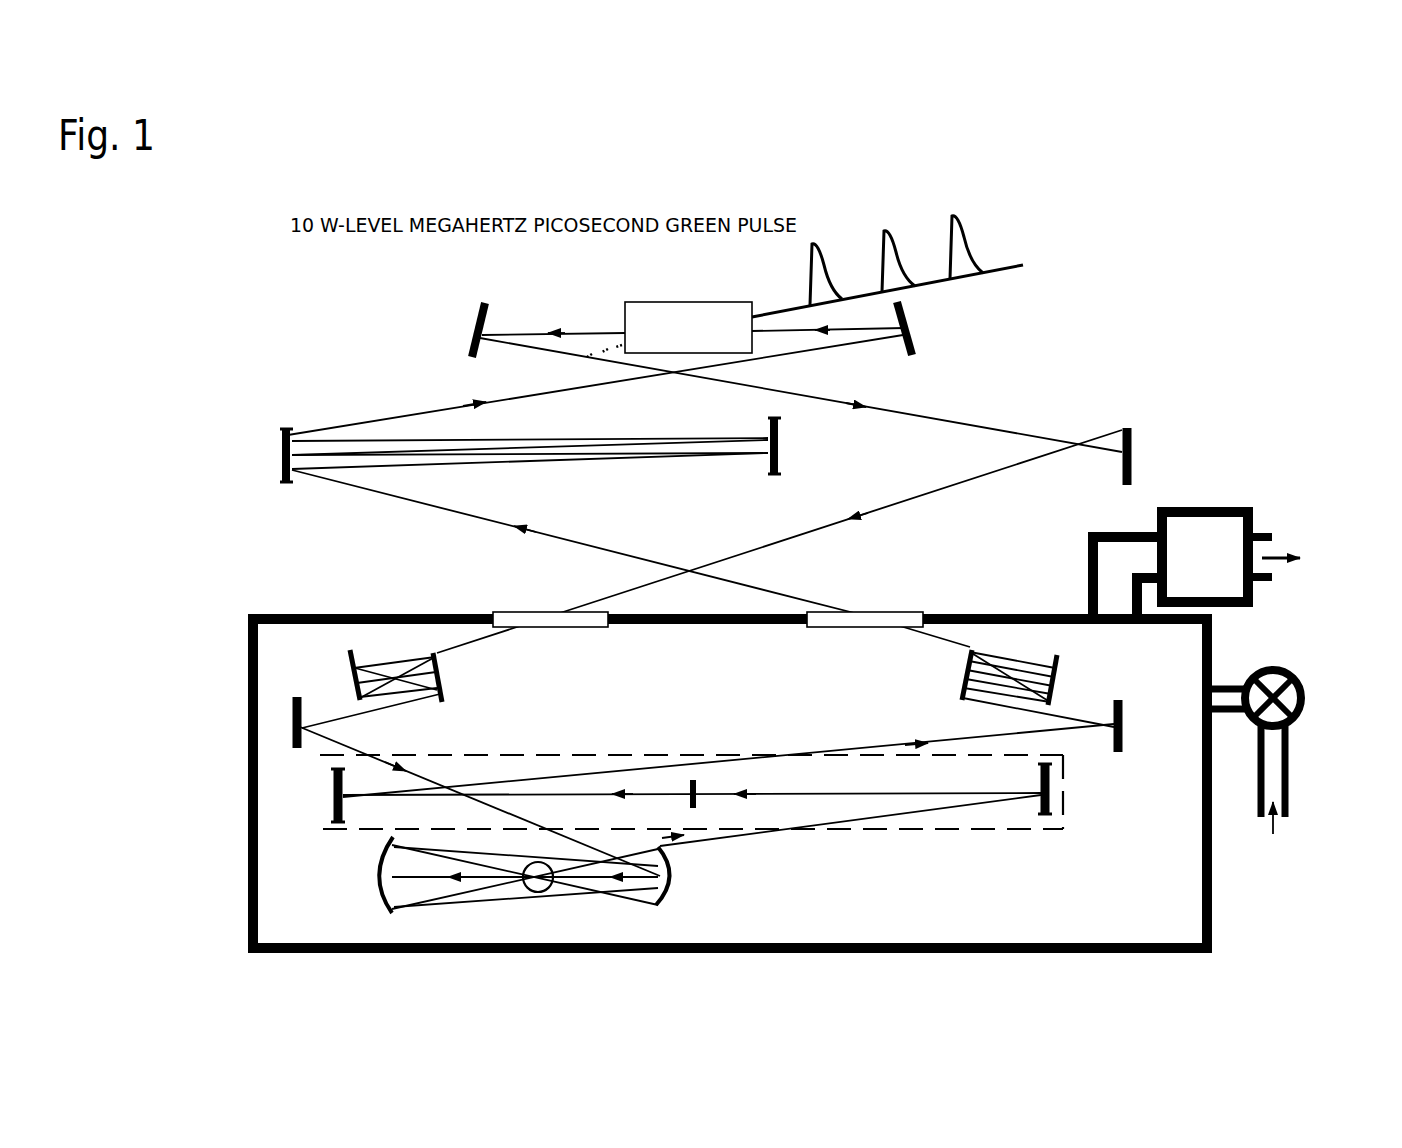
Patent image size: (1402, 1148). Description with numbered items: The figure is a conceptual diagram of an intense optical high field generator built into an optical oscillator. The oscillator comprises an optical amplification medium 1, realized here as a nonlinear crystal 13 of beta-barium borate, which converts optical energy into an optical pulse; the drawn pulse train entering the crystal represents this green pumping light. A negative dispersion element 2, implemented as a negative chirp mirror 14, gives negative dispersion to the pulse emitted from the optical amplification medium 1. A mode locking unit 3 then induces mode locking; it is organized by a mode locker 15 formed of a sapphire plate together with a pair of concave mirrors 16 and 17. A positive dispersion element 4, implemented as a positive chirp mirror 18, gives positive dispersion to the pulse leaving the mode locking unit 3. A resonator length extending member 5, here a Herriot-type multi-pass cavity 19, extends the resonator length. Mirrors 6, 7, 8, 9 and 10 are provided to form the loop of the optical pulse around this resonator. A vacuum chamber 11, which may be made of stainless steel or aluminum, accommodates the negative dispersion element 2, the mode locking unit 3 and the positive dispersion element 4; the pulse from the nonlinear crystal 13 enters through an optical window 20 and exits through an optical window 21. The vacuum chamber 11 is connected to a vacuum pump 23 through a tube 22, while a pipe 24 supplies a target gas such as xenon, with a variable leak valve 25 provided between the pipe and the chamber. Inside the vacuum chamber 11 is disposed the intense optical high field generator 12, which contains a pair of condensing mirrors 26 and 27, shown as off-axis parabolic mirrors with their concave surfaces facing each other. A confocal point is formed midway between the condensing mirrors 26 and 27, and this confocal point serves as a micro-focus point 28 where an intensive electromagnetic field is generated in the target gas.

The optical amplification medium 1 is at (696, 303).
The nonlinear crystal 13 is at (684, 302).
The negative dispersion element 2 is at (458, 677).
The negative chirp mirror 14 is at (446, 692).
The mode locking unit 3 is at (956, 823).
The positive dispersion element 4 is at (1070, 677).
The positive chirp mirror 18 is at (1062, 677).
The resonator length extending member 5 is at (321, 493).
The Herriot-type multi-pass cavity 19 is at (316, 494).
The mirror 6 is at (474, 333).
The mirror 7 is at (1133, 468).
The mirror 8 is at (290, 742).
The mirror 9 is at (1125, 731).
The mirror 10 is at (915, 337).
The vacuum chamber 11 is at (1003, 613).
The intense optical high field generator 12 is at (520, 954).
The mode locker 15 is at (697, 802).
The concave mirror 16 is at (1053, 806).
The concave mirror 17 is at (333, 812).
The optical window 20 is at (545, 613).
The optical window 21 is at (892, 613).
The tube 22 is at (1107, 531).
The vacuum pump 23 is at (1210, 506).
The pipe 24 is at (1292, 774).
The variable leak valve 25 is at (1307, 694).
The condensing mirror 26 is at (672, 892).
The condensing mirror 27 is at (377, 893).
The micro-focus point 28 is at (553, 893).